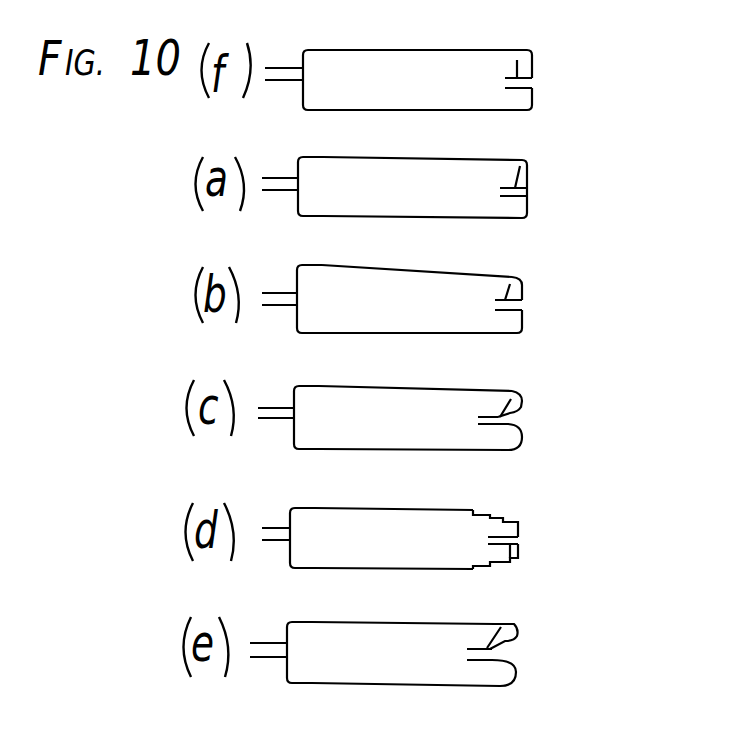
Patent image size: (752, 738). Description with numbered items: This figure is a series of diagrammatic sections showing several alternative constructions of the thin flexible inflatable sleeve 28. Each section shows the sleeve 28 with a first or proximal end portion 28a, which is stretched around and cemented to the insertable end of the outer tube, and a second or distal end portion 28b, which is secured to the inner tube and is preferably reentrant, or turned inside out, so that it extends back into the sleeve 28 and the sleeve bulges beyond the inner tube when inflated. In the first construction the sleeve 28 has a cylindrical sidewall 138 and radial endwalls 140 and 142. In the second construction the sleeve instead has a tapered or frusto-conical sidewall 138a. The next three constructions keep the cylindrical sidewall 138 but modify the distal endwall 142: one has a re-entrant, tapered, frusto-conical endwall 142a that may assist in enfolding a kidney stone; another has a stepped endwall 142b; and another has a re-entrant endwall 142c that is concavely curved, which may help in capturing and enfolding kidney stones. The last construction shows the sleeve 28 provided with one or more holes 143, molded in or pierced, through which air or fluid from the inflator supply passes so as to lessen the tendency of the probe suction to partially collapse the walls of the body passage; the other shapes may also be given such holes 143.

The inflatable sleeve 28 is at (421, 351).
The proximal end portion 28a is at (268, 332).
The distal end portion 28b is at (546, 352).
The cylindrical sidewall 138 is at (419, 351).
The tapered or frusto-conical sidewall 138a is at (388, 270).
The radial endwall 140 is at (294, 354).
The radial endwall 142 is at (530, 176).
The re-entrant tapered frusto-conical endwall 142a is at (514, 408).
The stepped endwall 142b is at (503, 517).
The concavely curved re-entrant endwall 142c is at (508, 644).
The holes 143 is at (534, 90).